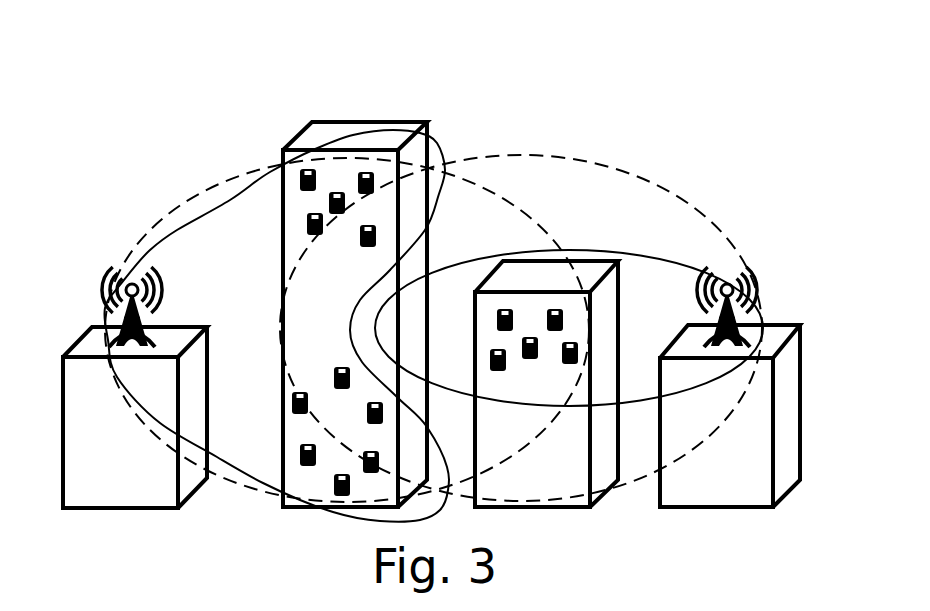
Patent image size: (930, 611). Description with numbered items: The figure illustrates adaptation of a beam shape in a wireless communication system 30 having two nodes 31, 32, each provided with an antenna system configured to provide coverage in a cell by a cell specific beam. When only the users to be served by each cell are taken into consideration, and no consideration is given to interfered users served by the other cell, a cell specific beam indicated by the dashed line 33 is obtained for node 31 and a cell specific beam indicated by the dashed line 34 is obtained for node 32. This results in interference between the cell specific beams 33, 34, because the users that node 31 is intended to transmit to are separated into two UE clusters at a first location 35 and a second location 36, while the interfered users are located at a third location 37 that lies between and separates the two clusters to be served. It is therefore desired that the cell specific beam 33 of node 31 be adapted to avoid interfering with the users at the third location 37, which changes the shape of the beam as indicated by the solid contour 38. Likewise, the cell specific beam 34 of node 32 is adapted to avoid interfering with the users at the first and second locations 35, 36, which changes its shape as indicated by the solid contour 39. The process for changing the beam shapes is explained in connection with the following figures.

The wireless communication system 30 is at (130, 112).
The node 31 is at (118, 306).
The node 32 is at (750, 318).
The cell specific beam 33 is at (148, 231).
The cell specific beam 34 is at (703, 214).
The first location 35 is at (327, 158).
The second location 36 is at (291, 479).
The third location 37 is at (558, 397).
The adapted cell specific beam shape 38 is at (450, 197).
The adapted cell specific beam shape 39 is at (573, 251).